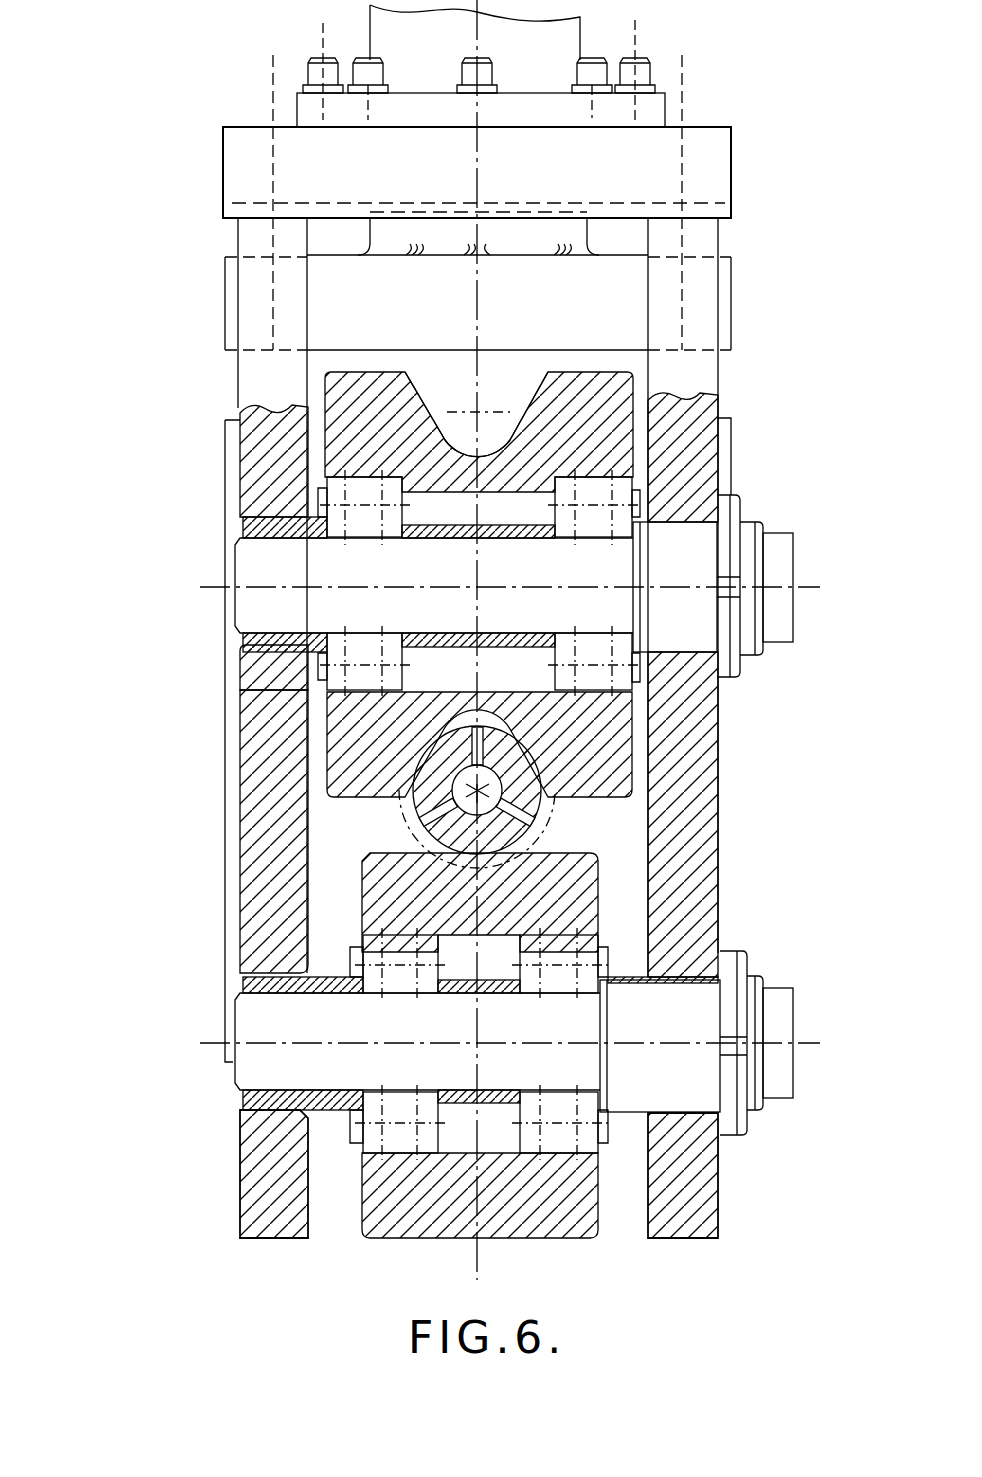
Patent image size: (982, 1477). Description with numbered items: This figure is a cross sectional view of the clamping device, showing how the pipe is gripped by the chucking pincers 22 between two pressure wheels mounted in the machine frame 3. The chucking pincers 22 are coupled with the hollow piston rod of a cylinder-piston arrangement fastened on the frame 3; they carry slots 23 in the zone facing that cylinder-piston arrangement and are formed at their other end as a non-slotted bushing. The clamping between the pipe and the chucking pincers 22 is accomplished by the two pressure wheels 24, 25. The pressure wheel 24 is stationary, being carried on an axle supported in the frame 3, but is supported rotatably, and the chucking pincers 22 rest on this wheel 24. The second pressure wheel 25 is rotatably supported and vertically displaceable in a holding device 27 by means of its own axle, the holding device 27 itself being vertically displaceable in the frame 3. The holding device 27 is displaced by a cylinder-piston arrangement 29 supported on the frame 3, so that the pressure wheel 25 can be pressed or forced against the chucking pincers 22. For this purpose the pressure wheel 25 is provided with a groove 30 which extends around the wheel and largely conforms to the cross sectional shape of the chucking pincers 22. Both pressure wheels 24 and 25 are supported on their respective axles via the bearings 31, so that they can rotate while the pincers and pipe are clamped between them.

The machine frame 3 is at (715, 1168).
The chucking pincers 22 is at (550, 803).
The slots 23 is at (413, 827).
The pressure wheel 24 is at (592, 878).
The second pressure wheel 25 is at (615, 435).
The holding device 27 is at (685, 373).
The cylinder-piston arrangement 29 is at (575, 33).
The groove 30 is at (492, 395).
The bearings 31 is at (623, 685).